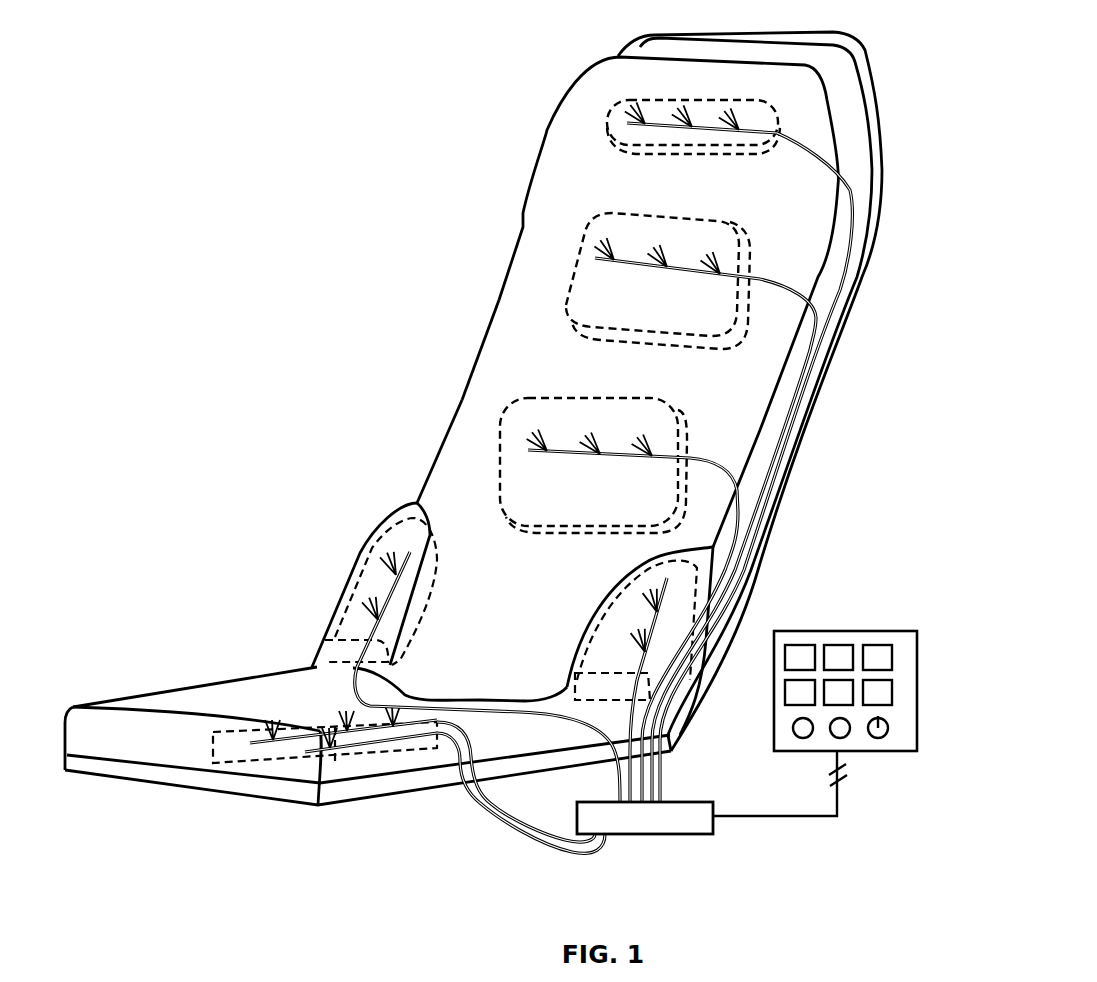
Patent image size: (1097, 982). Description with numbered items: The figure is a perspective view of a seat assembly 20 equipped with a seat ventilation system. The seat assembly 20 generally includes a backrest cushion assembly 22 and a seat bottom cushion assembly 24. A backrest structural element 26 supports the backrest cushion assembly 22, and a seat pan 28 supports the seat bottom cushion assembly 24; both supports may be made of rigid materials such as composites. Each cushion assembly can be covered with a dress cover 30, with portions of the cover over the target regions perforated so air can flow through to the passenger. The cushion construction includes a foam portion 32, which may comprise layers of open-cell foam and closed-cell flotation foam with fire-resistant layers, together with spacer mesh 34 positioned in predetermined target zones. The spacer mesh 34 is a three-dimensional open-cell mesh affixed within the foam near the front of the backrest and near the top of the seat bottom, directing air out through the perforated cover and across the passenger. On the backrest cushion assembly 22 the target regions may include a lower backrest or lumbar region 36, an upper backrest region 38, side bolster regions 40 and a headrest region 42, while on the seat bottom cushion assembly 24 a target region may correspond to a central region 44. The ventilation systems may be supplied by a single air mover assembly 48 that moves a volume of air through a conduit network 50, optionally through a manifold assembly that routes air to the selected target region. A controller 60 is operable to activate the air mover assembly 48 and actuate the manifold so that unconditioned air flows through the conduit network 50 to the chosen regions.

The seat assembly 20 is at (483, 148).
The backrest cushion assembly 22 is at (525, 273).
The seat bottom cushion assembly 24 is at (211, 698).
The backrest structural element 26 is at (873, 120).
The seat pan 28 is at (123, 772).
The dress cover 30 is at (456, 440).
The foam portion 32 is at (489, 357).
The spacer mesh 34 is at (618, 125).
The lower backrest or lumbar region 36 is at (690, 445).
The upper backrest region 38 is at (753, 263).
The side bolster regions 40 is at (387, 527).
The headrest region 42 is at (770, 117).
The central region 44 is at (237, 755).
The air mover assembly 48 is at (664, 835).
The conduit network 50 is at (498, 827).
The controller 60 is at (897, 630).